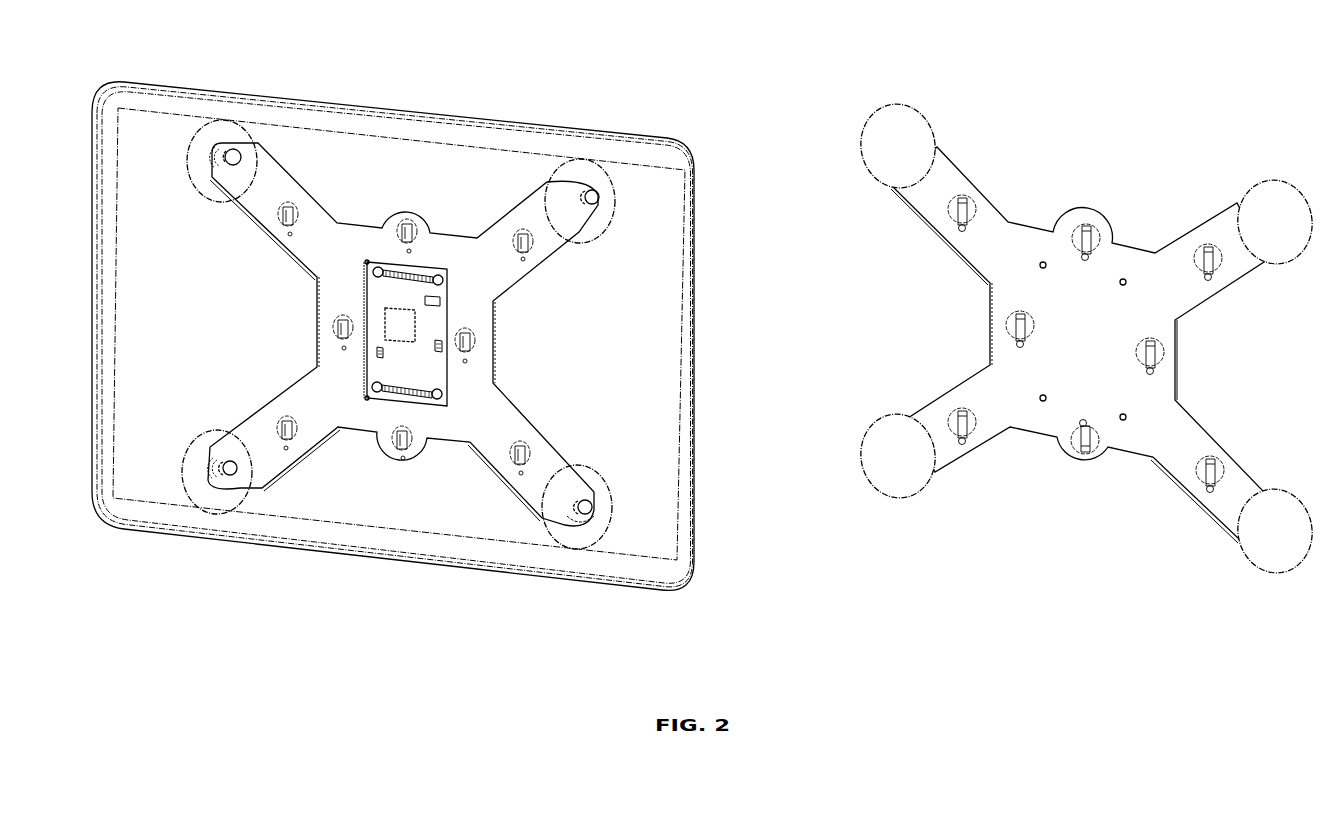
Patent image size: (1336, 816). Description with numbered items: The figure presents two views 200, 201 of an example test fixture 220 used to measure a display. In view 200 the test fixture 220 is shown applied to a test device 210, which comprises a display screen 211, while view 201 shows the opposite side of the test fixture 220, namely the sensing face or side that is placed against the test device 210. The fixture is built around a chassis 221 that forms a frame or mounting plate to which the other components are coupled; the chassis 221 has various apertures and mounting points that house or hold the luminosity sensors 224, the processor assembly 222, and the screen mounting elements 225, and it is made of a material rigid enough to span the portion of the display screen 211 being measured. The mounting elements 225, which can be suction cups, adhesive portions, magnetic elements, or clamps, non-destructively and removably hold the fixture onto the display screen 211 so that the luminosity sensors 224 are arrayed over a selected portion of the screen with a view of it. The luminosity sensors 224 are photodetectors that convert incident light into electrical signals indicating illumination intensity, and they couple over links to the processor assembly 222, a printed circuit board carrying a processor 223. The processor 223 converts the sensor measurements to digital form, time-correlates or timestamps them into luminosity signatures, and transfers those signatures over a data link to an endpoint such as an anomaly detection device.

The view 200 is at (174, 54).
The view 201 is at (874, 55).
The test device 210 is at (487, 117).
The display screen 211 is at (649, 359).
The test fixture 220 is at (350, 213).
The chassis 221 is at (477, 389).
The processor assembly 222 is at (435, 266).
The processor 223 is at (400, 325).
The luminosity sensors 224 is at (302, 219).
The mounting elements 225 is at (197, 193).